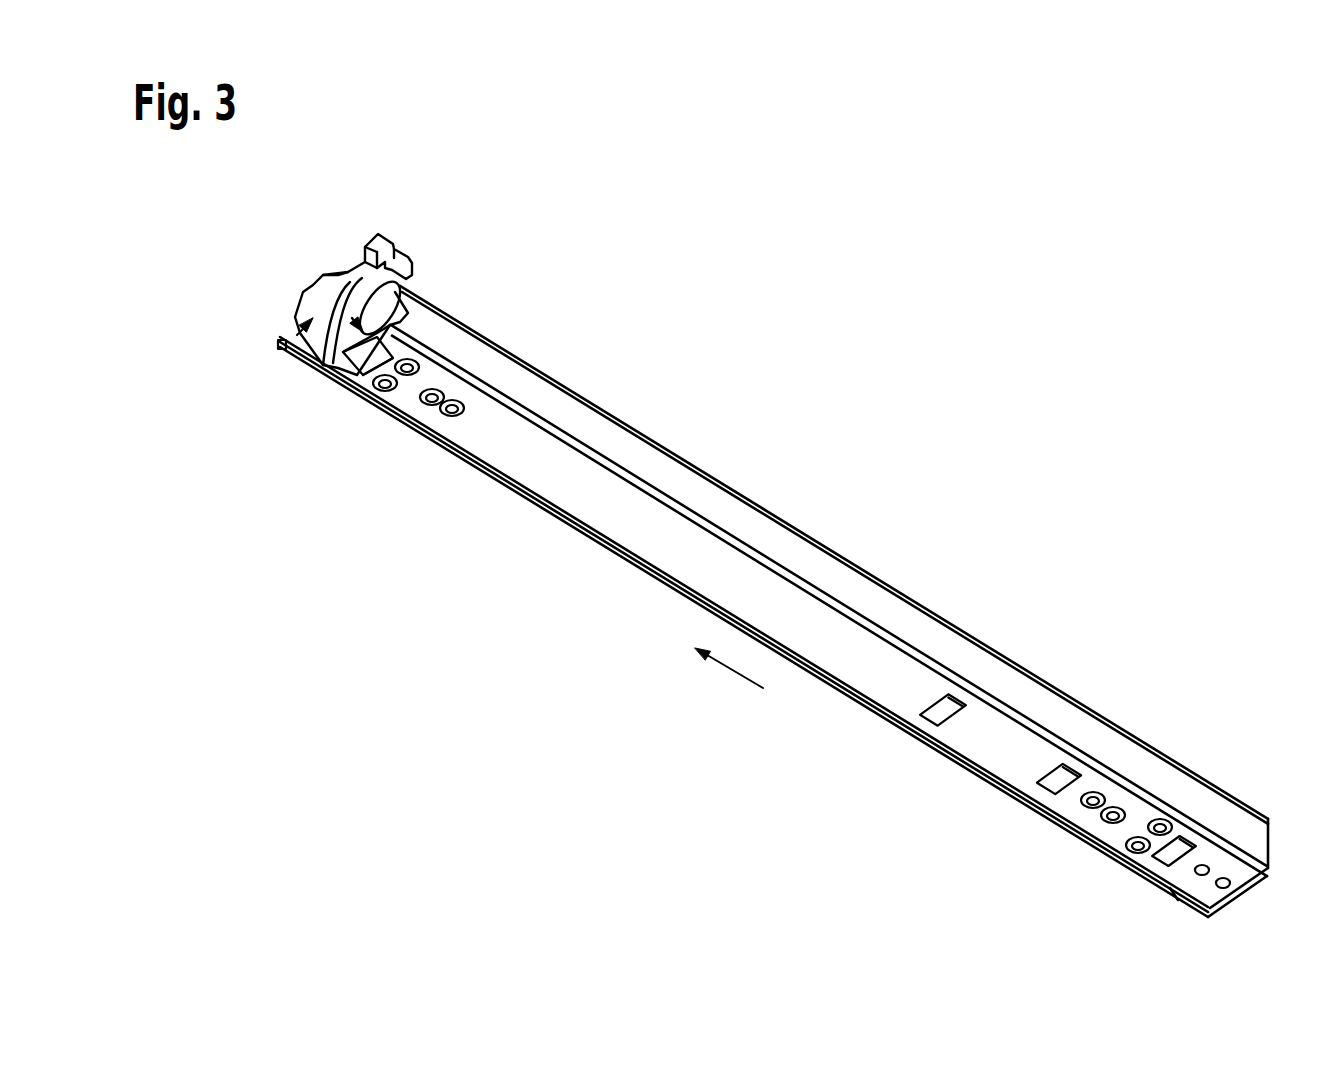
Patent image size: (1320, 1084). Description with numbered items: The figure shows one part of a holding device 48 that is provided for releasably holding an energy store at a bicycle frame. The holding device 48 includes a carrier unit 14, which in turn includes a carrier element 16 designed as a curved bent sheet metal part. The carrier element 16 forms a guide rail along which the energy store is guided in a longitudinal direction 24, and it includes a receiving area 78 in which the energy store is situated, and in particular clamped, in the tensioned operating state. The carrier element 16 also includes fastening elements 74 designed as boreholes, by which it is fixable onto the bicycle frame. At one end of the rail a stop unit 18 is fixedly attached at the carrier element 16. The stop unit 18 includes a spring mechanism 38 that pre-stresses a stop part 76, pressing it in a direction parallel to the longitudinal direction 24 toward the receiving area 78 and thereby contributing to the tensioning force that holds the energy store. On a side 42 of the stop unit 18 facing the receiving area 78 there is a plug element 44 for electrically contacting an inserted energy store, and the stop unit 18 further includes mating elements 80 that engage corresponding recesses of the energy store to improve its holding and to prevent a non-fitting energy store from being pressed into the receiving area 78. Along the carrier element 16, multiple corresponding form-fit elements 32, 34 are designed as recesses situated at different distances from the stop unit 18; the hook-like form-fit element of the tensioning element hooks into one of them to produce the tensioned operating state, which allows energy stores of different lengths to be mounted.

The carrier unit 14 is at (833, 488).
The carrier element 16 is at (868, 668).
The stop unit 18 is at (391, 247).
The longitudinal direction 24 is at (737, 678).
The corresponding form-fit element 32 is at (1178, 838).
The corresponding form-fit element 34 is at (1067, 773).
The spring mechanism 38 is at (283, 350).
The side 42 is at (372, 372).
The plug element 44 is at (392, 338).
The holding device 48 is at (720, 357).
The fastening elements 74 is at (452, 408).
The stop part 76 is at (405, 273).
The receiving area 78 is at (693, 553).
The mating elements 80 is at (348, 373).